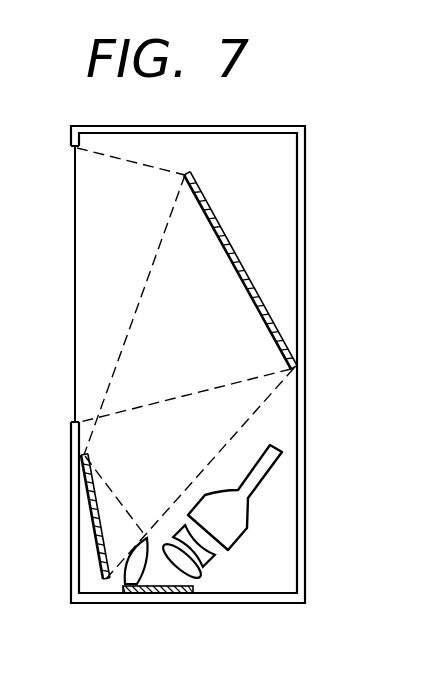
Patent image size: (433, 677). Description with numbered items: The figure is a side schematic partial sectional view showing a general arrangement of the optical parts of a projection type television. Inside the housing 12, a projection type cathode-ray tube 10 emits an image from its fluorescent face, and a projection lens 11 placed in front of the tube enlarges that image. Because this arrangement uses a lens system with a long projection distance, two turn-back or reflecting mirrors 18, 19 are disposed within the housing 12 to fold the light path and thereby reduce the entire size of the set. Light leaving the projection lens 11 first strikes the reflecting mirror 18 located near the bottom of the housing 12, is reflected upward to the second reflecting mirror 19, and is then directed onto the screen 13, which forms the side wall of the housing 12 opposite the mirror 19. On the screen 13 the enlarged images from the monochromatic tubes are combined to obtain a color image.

The projection type cathode-ray tube 10 is at (237, 510).
The projection lens 11 is at (168, 572).
The housing 12 is at (306, 570).
The screen 13 is at (75, 284).
The turn-back or reflecting mirror 18 is at (104, 578).
The turn-back or reflecting mirror 19 is at (250, 284).